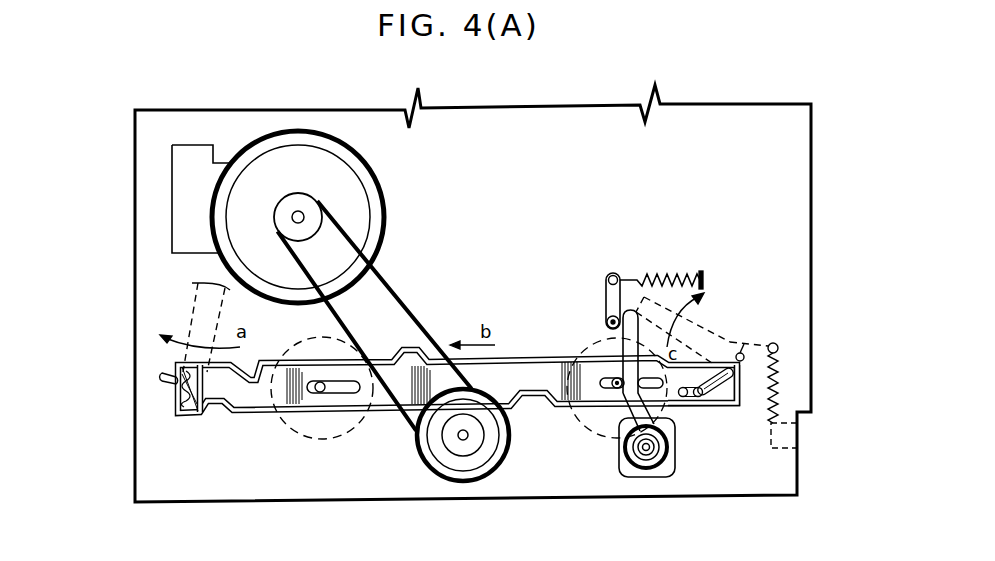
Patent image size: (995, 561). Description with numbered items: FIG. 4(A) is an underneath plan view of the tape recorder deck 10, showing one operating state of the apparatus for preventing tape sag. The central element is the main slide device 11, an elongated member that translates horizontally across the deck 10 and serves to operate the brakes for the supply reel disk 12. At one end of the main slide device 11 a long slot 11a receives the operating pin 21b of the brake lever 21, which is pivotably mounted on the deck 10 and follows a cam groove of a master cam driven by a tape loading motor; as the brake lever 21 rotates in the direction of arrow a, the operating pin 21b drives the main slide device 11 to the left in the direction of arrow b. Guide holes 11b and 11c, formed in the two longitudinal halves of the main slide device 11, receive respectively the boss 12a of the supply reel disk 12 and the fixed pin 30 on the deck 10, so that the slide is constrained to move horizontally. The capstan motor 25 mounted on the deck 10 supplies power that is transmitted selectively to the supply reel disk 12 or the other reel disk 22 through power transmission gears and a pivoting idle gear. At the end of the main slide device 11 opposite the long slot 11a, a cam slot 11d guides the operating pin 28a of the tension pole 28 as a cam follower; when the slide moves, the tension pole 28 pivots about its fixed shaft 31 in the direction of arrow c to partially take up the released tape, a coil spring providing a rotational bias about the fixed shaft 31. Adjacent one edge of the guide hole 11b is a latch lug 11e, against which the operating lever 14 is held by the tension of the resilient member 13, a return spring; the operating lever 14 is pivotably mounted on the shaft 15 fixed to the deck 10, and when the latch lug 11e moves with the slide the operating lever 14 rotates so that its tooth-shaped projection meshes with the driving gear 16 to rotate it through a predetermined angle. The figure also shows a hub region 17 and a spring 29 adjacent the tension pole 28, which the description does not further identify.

The deck 10 is at (812, 197).
The main slide device 11 is at (510, 356).
The long slot 11a is at (180, 412).
The guide hole 11b is at (608, 395).
The guide hole 11c is at (345, 397).
The cam slot 11d is at (683, 404).
The latch lug 11e is at (618, 372).
The supply reel disk 12 is at (574, 433).
The boss 12a is at (612, 390).
The resilient member 13 is at (669, 273).
The operating lever 14 is at (606, 293).
The shaft 15 is at (611, 298).
The driving gear 16 is at (648, 465).
The gear 17 is at (664, 464).
The brake lever 21 is at (194, 306).
The operating pin 21b is at (178, 388).
The reel disk 22 is at (297, 434).
The capstan motor 25 is at (360, 205).
The tension pole 28 is at (712, 333).
The operating pin 28a is at (700, 406).
The spring 29 is at (790, 372).
The fixed pin 30 is at (318, 395).
The fixed shaft 31 is at (745, 348).